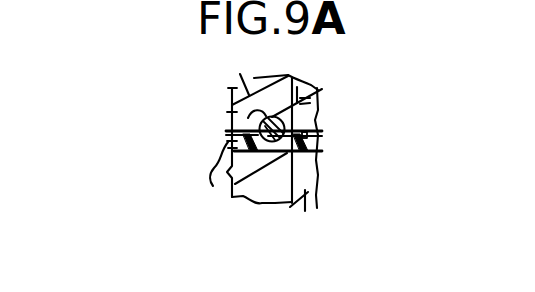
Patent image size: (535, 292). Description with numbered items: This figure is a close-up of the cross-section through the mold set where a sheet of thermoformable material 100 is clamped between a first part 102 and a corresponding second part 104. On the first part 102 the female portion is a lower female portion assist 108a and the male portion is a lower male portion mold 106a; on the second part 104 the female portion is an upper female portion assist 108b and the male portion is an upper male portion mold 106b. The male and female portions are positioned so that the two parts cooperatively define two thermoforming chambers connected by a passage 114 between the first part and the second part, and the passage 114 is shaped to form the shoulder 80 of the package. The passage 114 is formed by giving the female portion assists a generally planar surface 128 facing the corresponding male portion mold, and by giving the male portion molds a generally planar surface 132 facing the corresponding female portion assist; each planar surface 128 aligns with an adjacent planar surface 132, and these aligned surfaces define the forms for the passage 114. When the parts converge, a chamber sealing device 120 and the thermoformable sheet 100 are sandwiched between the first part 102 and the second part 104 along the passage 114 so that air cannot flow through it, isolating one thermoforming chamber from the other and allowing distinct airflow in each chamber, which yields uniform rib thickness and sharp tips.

The second part 104 is at (316, 89).
The upper male portion mold 106b is at (239, 73).
The lower male portion mold 106a is at (305, 197).
The lower female portion assist 108a is at (252, 192).
The upper female portion assist 108b is at (310, 108).
The chamber sealing device 120 is at (240, 131).
The planar surface 128 is at (267, 152).
The planar surface 132 is at (229, 143).
The passage 114 is at (237, 173).
The sheet of thermoformable material 100 is at (318, 146).
The shoulder 80 is at (318, 146).
The first part 102 is at (305, 211).